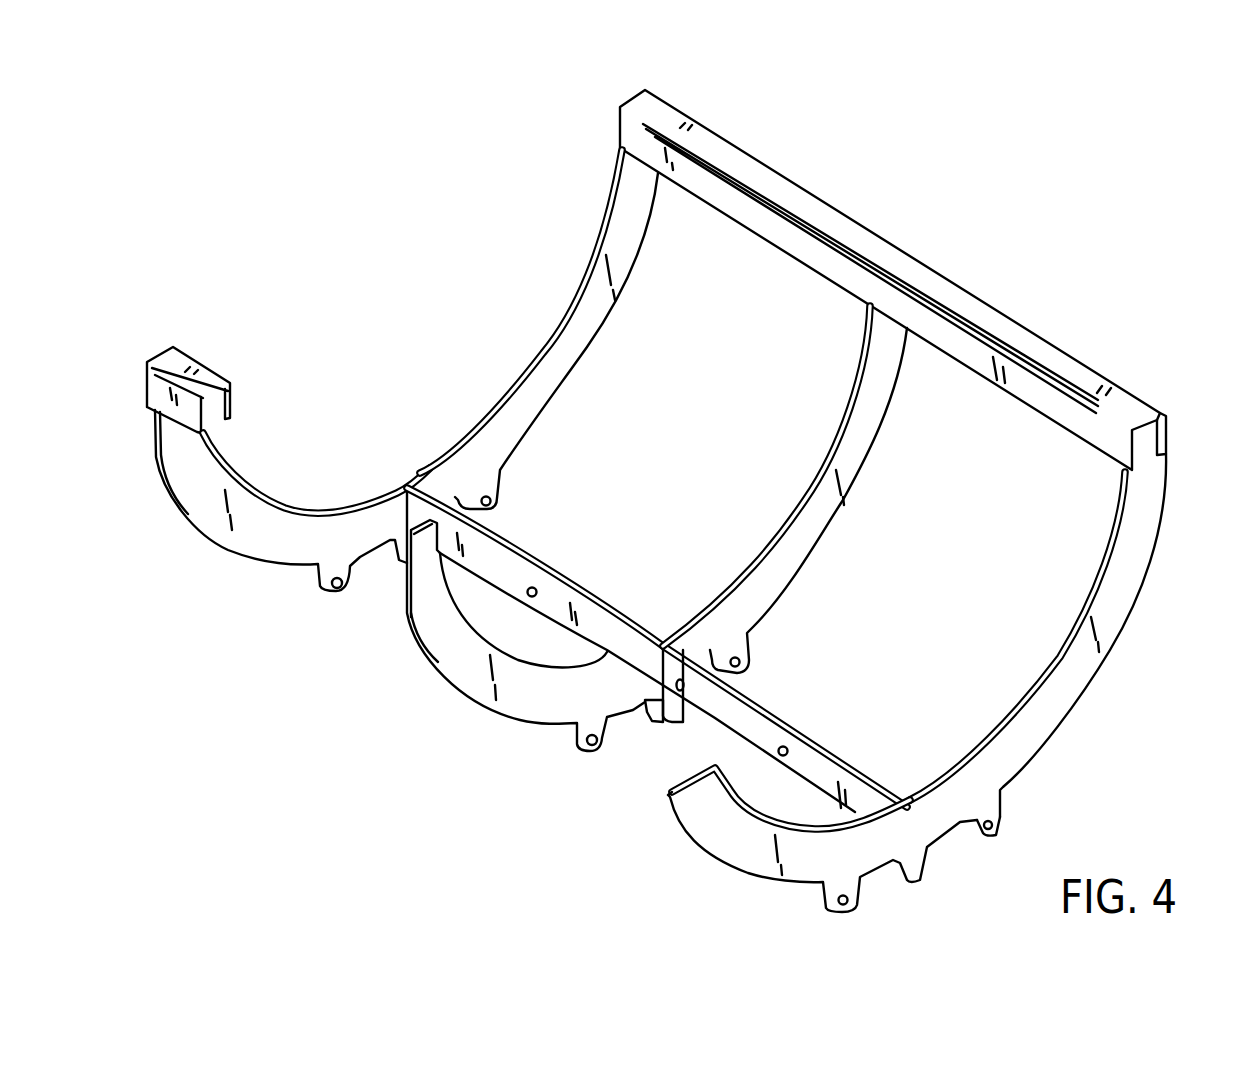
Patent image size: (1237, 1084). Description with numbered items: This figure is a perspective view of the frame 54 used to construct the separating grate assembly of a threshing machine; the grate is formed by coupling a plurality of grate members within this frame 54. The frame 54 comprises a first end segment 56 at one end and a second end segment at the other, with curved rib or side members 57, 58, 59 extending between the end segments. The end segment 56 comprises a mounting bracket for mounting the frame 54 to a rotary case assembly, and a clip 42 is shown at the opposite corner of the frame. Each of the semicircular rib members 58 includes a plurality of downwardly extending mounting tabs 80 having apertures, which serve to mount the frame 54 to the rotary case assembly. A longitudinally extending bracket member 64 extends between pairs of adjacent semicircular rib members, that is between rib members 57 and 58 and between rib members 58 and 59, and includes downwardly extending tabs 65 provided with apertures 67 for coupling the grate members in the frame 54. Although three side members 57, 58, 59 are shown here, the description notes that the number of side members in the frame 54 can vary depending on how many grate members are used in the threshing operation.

The clip 42 is at (207, 360).
The frame 54 is at (1033, 318).
The first end segment 56 is at (752, 152).
The curved rib or side member 57 is at (843, 503).
The semicircular rib member 58 is at (1130, 627).
The curved rib or side member 59 is at (600, 332).
The longitudinally extending bracket member 64 is at (755, 700).
The downwardly extending tab 65 is at (673, 727).
The aperture 67 is at (673, 662).
The mounting tab 80 is at (1000, 813).